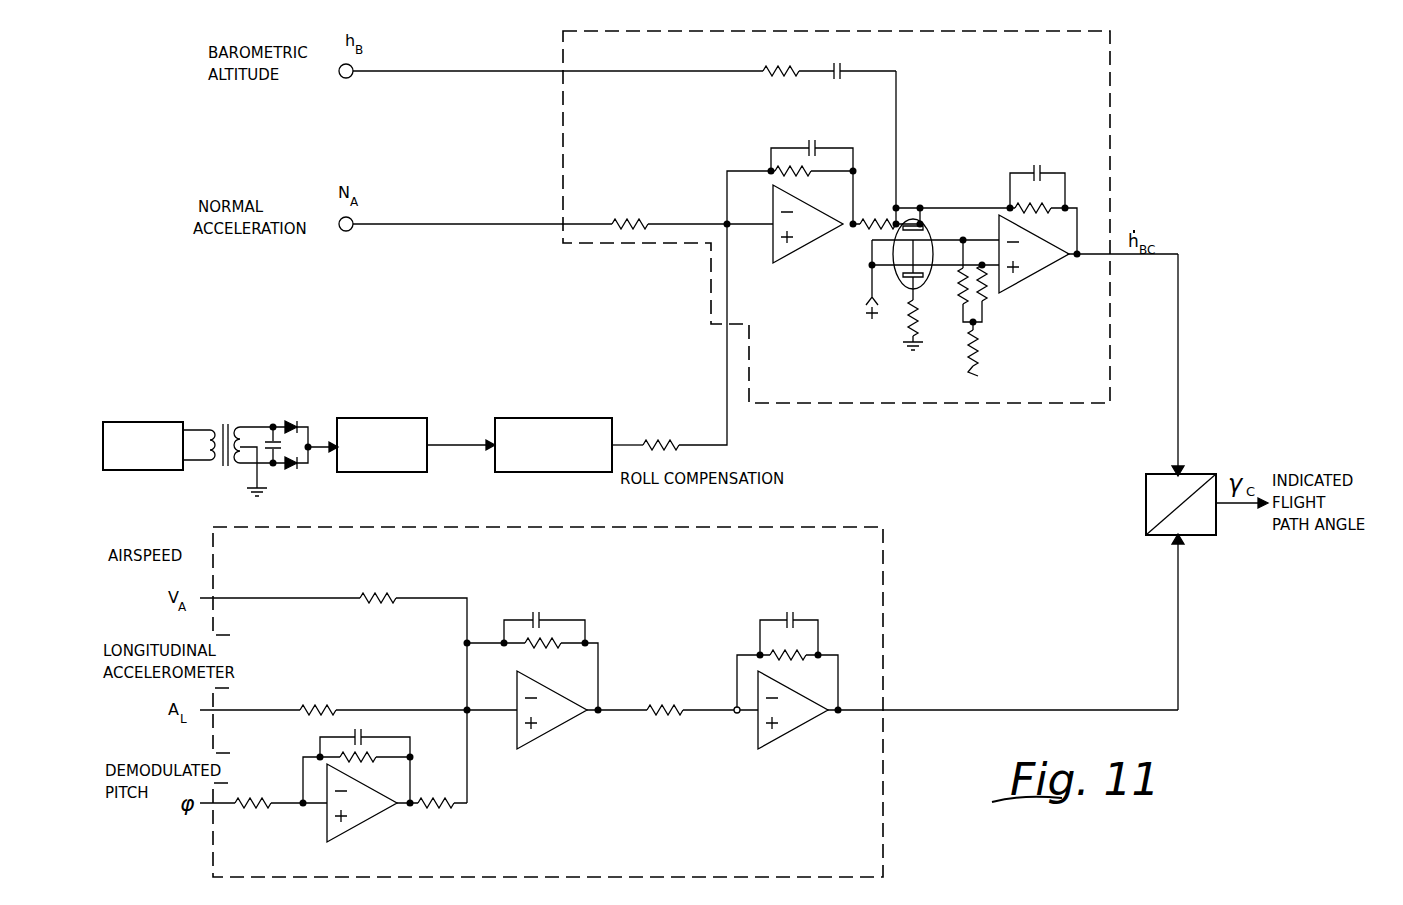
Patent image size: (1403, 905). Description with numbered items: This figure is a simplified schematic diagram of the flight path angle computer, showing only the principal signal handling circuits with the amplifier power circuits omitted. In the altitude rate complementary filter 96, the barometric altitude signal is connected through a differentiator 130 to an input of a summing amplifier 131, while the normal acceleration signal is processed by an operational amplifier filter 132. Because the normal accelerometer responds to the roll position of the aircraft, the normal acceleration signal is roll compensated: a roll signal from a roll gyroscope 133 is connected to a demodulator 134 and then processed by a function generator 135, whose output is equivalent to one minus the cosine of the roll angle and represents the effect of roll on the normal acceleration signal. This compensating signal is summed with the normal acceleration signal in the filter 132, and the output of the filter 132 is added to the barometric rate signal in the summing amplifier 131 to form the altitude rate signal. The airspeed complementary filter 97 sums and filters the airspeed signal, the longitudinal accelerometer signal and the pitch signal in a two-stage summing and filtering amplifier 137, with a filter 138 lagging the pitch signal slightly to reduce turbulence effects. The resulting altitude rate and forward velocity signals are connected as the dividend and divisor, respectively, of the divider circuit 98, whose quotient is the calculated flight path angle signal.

The altitude rate complementary filter 96 is at (1112, 85).
The airspeed complementary filter 97 is at (820, 526).
The divider circuit 98 is at (1183, 483).
The differentiator 130 is at (808, 101).
The summing amplifier 131 is at (1006, 163).
The operational amplifier filter 132 is at (713, 175).
The roll gyroscope 133 is at (125, 422).
The demodulator 134 is at (370, 418).
The function generator 135 is at (530, 418).
The two-stage summing and filtering amplifier 137 is at (668, 660).
The filter 138 is at (404, 809).